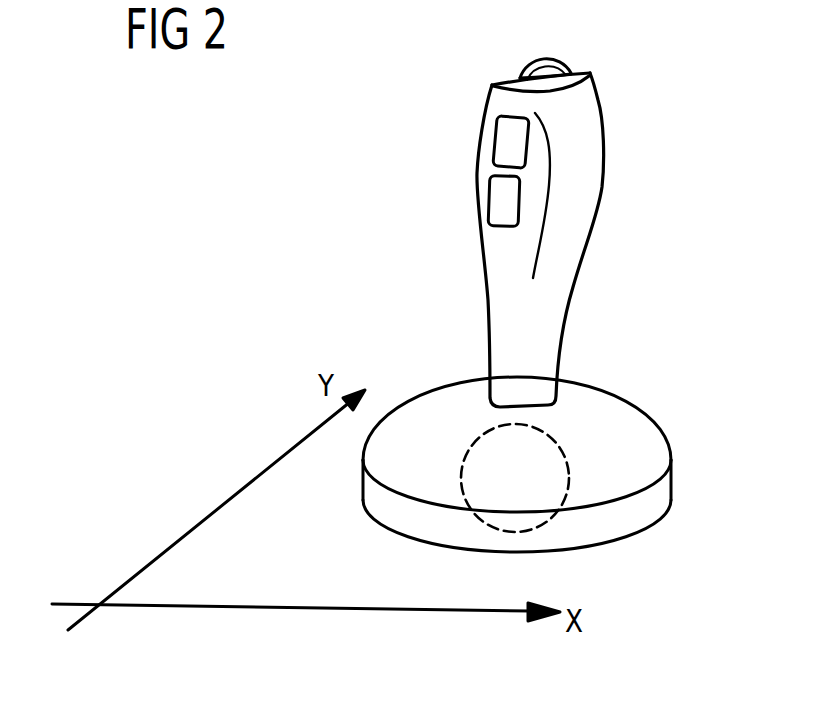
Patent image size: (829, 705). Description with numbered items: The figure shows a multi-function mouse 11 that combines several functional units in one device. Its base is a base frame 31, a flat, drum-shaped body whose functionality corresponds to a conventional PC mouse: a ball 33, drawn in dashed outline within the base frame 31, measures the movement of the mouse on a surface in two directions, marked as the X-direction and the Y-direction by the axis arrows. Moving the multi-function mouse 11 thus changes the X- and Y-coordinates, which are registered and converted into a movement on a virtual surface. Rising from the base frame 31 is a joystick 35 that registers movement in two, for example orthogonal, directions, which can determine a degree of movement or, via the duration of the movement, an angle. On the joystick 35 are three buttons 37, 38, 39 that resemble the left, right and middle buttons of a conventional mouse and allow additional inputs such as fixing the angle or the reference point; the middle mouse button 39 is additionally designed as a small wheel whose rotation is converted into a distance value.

The multi-function mouse 11 is at (408, 162).
The base frame 31 is at (613, 422).
The ball 33 is at (475, 448).
The joystick 35 is at (580, 211).
The button 37 is at (497, 203).
The button 38 is at (505, 142).
The middle mouse button 39 is at (553, 70).